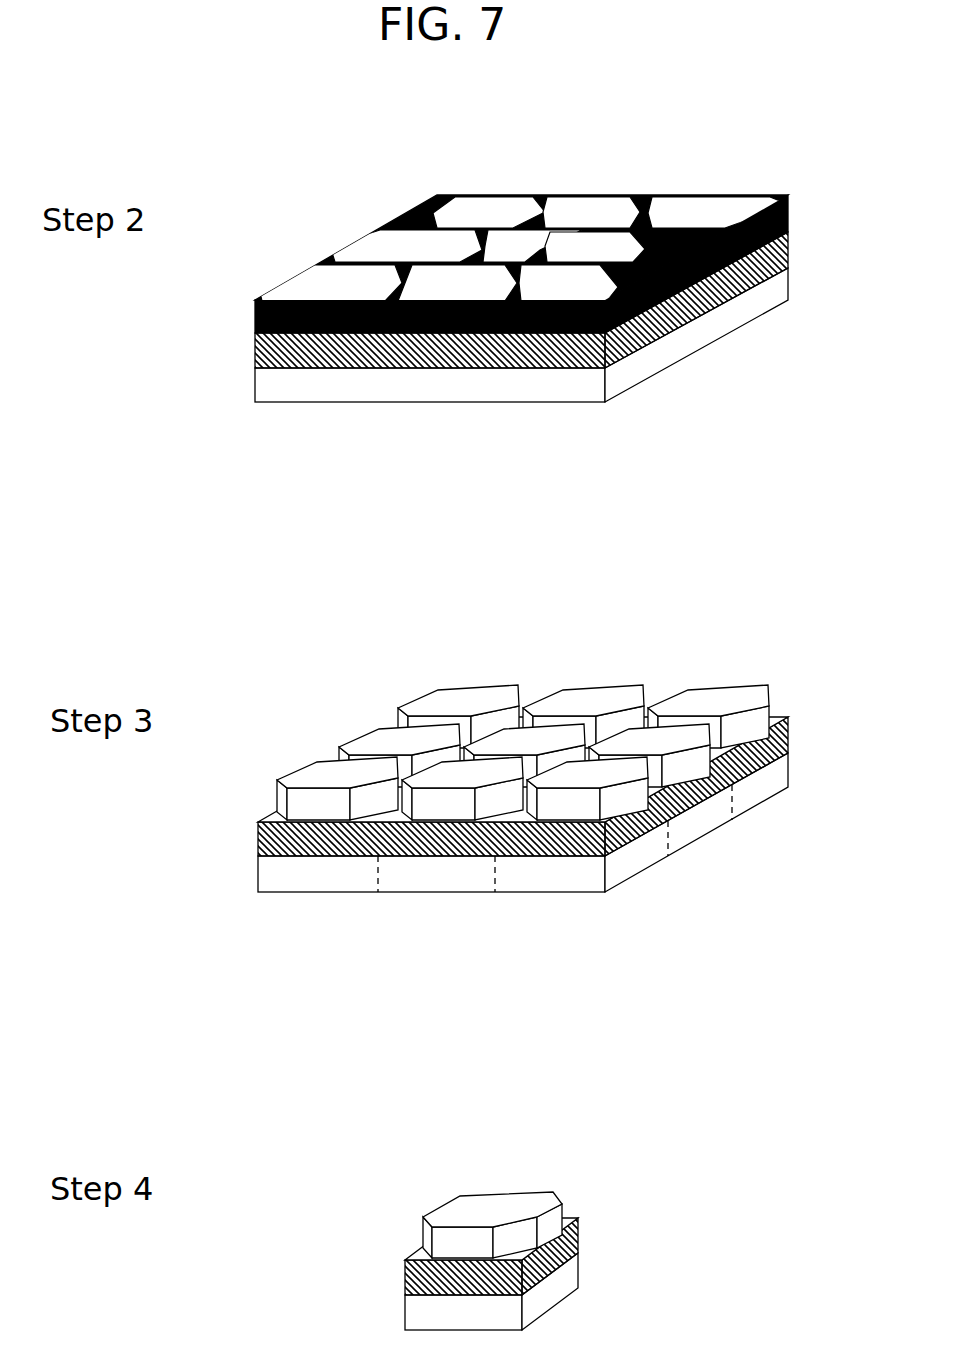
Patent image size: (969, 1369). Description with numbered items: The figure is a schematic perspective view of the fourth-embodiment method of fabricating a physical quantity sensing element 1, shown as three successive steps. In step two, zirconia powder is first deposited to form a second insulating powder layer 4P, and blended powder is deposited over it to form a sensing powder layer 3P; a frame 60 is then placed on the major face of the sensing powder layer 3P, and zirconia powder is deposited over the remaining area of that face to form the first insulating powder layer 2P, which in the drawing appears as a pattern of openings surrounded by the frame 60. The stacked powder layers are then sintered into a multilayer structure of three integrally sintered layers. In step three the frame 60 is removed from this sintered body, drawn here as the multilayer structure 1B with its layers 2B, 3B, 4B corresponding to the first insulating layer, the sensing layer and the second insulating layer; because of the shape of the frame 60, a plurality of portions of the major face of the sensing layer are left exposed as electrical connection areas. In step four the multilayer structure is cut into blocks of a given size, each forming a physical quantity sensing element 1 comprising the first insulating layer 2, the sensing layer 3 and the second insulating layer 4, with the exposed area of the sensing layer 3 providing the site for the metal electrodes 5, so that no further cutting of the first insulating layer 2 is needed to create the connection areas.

The first insulating powder layer 2P is at (713, 200).
The frame 60 is at (781, 194).
The sensing powder layer 3P is at (790, 248).
The second insulating powder layer 4P is at (790, 285).
The light emitting element array 1B is at (575, 735).
The hexagonal prisms 2B is at (737, 692).
The intermediate layer 3B is at (790, 738).
The substrate 4B is at (790, 778).
The physical quantity sensing element 1 is at (538, 1225).
The first insulating layer 2 is at (506, 1200).
The sensing layer 3 is at (504, 1256).
The second insulating layer 4 is at (570, 1281).
The metal electrodes 5 is at (405, 1255).